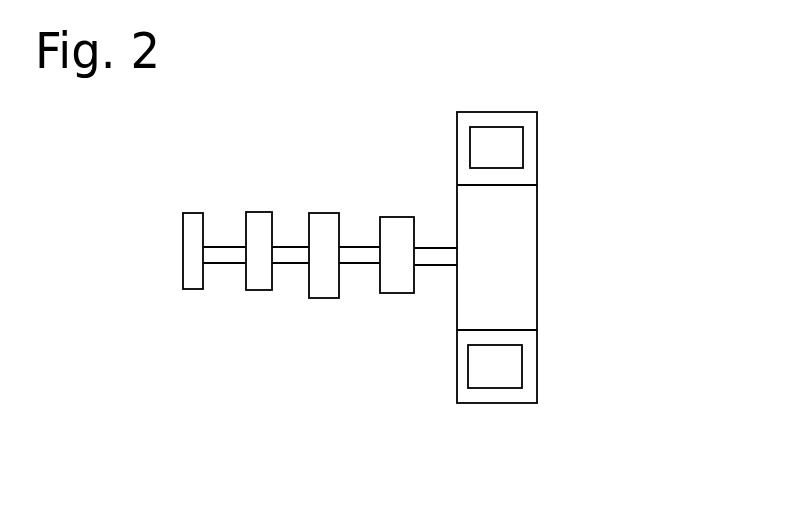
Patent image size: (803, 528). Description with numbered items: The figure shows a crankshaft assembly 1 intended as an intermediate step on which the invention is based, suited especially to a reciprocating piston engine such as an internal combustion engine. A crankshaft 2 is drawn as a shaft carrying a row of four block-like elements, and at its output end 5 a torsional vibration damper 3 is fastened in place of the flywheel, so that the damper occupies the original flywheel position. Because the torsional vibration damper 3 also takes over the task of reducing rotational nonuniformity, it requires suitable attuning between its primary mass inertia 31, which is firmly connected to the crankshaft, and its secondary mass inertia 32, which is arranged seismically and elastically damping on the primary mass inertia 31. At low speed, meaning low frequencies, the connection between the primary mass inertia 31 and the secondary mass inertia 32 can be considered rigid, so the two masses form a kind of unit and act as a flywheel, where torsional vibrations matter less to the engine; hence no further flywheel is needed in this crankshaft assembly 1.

The crankshaft assembly 1 is at (280, 378).
The crankshaft 2 is at (293, 247).
The torsional vibration damper 3 is at (535, 205).
The output end 5 is at (550, 246).
The primary mass inertia 31 is at (514, 295).
The secondary mass inertia 32 is at (507, 370).